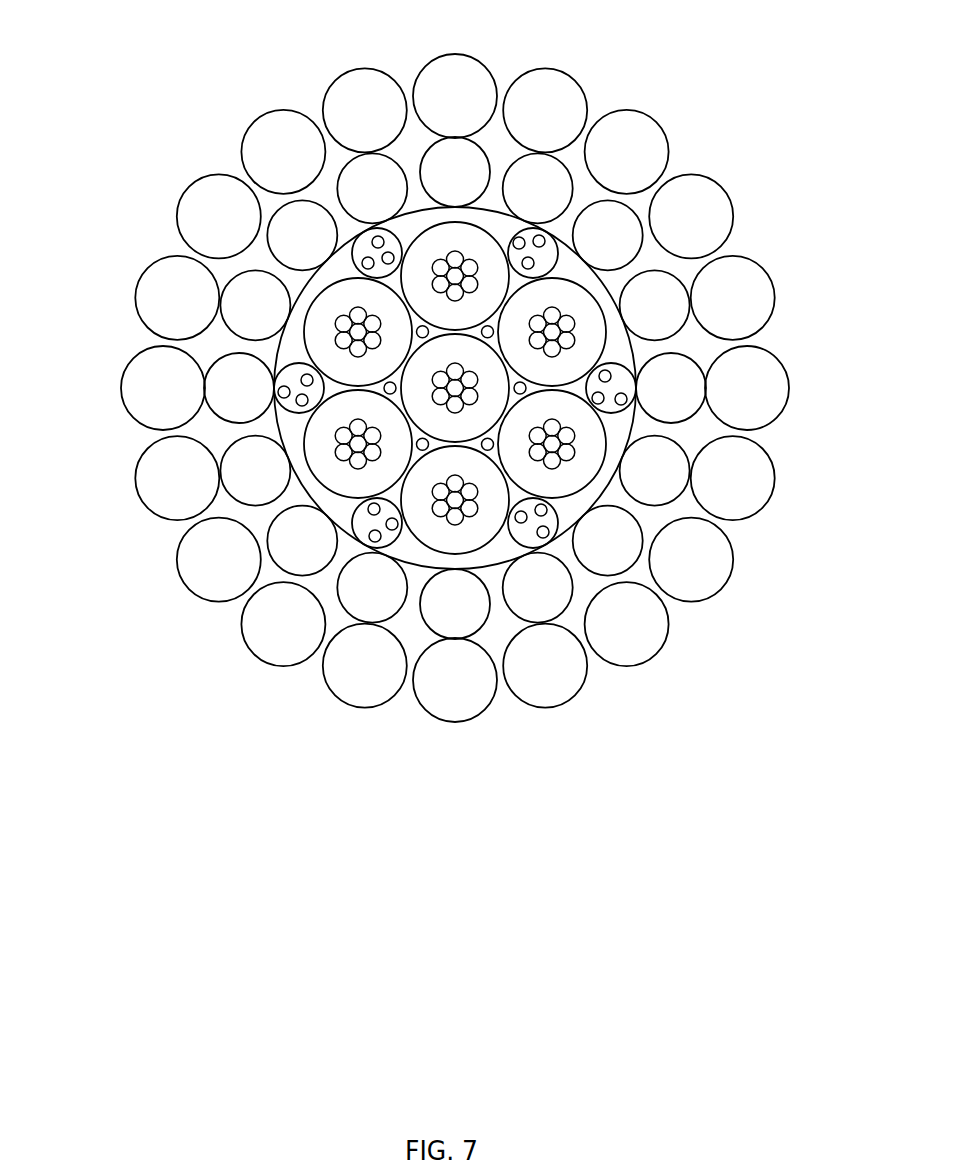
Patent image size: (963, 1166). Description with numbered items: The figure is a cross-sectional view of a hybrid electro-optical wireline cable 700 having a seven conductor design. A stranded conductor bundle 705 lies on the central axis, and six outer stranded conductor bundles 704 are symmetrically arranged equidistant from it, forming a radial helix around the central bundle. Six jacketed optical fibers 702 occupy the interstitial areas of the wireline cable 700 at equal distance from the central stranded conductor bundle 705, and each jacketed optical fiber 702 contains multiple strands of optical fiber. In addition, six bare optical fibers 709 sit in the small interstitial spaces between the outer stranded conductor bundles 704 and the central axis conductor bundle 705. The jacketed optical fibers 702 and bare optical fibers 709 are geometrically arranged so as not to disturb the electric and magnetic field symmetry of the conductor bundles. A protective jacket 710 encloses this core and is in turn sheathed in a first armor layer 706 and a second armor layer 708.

The wireline cable 700 is at (152, 186).
The jacketed optical fiber 702 is at (362, 520).
The stranded conductor bundle 704 is at (585, 328).
The stranded conductor bundle in the central axis 705 is at (490, 402).
The first armor layer 706 is at (230, 392).
The second armor layer 708 is at (165, 297).
The bare optical fiber 709 is at (484, 328).
The protective jacket 710 is at (418, 210).